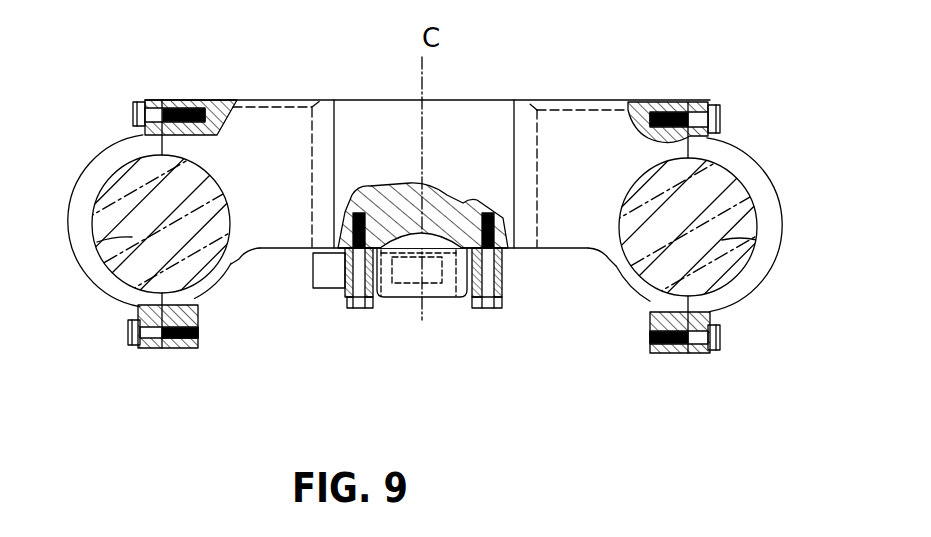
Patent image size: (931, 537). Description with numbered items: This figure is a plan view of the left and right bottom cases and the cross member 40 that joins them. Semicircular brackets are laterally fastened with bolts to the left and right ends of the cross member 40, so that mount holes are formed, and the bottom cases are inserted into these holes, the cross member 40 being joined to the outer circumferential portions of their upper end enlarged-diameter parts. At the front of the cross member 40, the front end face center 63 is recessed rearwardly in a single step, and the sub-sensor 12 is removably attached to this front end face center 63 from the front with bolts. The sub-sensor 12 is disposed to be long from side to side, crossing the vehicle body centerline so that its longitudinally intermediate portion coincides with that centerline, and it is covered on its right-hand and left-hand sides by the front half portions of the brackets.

The sub-sensor 12 is at (405, 298).
The cross member 40 is at (378, 96).
The front end face center 63 is at (520, 252).